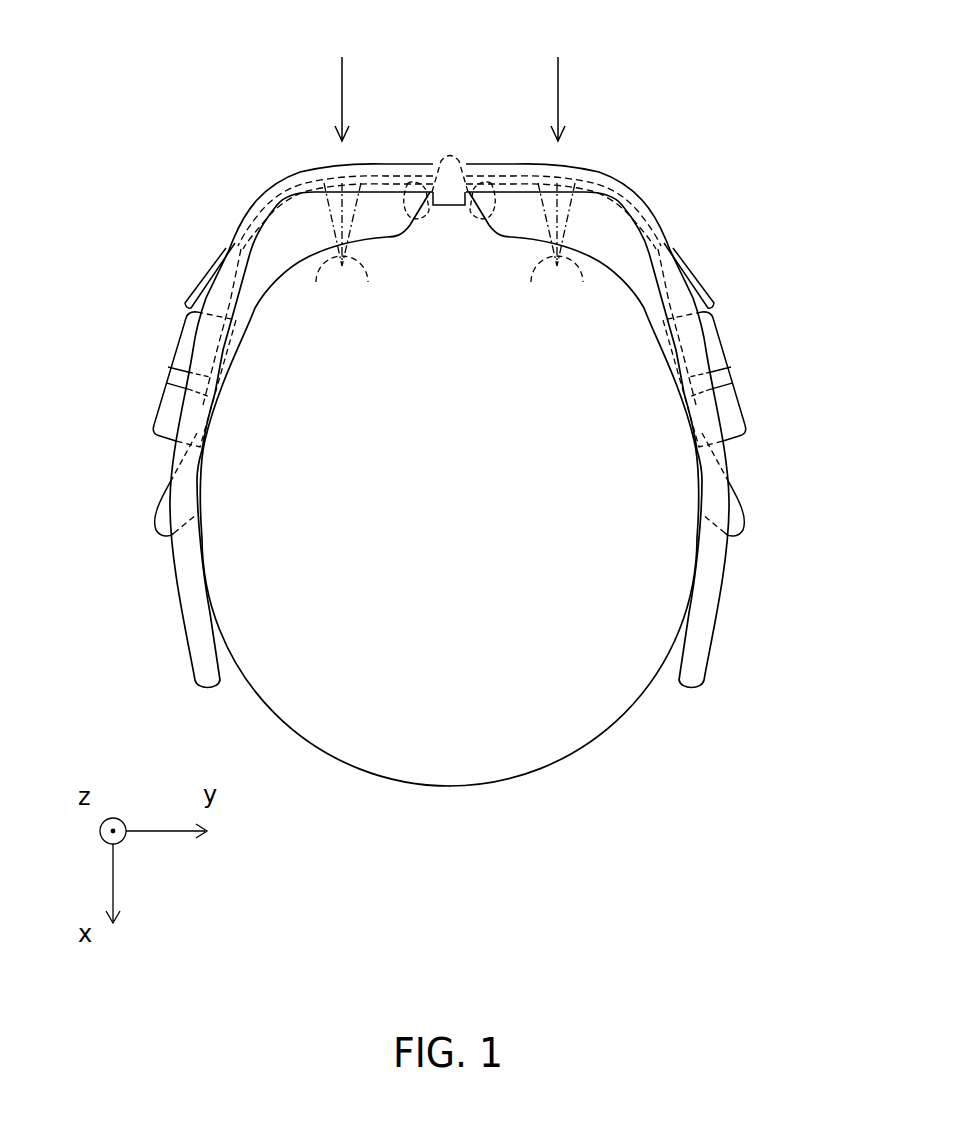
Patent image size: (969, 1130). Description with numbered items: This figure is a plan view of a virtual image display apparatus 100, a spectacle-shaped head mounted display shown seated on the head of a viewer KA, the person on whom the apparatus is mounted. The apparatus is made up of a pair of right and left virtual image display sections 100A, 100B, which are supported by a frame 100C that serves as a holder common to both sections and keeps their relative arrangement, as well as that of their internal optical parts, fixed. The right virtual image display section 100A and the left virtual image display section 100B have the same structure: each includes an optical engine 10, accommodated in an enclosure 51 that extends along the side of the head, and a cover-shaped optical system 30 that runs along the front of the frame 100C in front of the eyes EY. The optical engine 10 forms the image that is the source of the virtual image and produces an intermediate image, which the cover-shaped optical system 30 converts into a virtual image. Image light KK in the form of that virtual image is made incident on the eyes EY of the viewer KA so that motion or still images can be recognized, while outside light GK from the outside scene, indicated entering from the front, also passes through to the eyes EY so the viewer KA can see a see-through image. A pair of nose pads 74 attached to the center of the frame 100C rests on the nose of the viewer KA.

The virtual image display apparatus 100 is at (444, 358).
The right virtual image display section 100A is at (722, 265).
The left virtual image display section 100B is at (162, 266).
The frame 100C is at (247, 250).
The optical engine 10 is at (167, 417).
The enclosure 51 is at (168, 367).
The cover-shaped optical system 30 is at (292, 178).
The nose pads 74 is at (409, 185).
The image light KK is at (370, 198).
The outside light GK is at (345, 102).
The eyes EY is at (367, 277).
The viewer KA is at (451, 787).